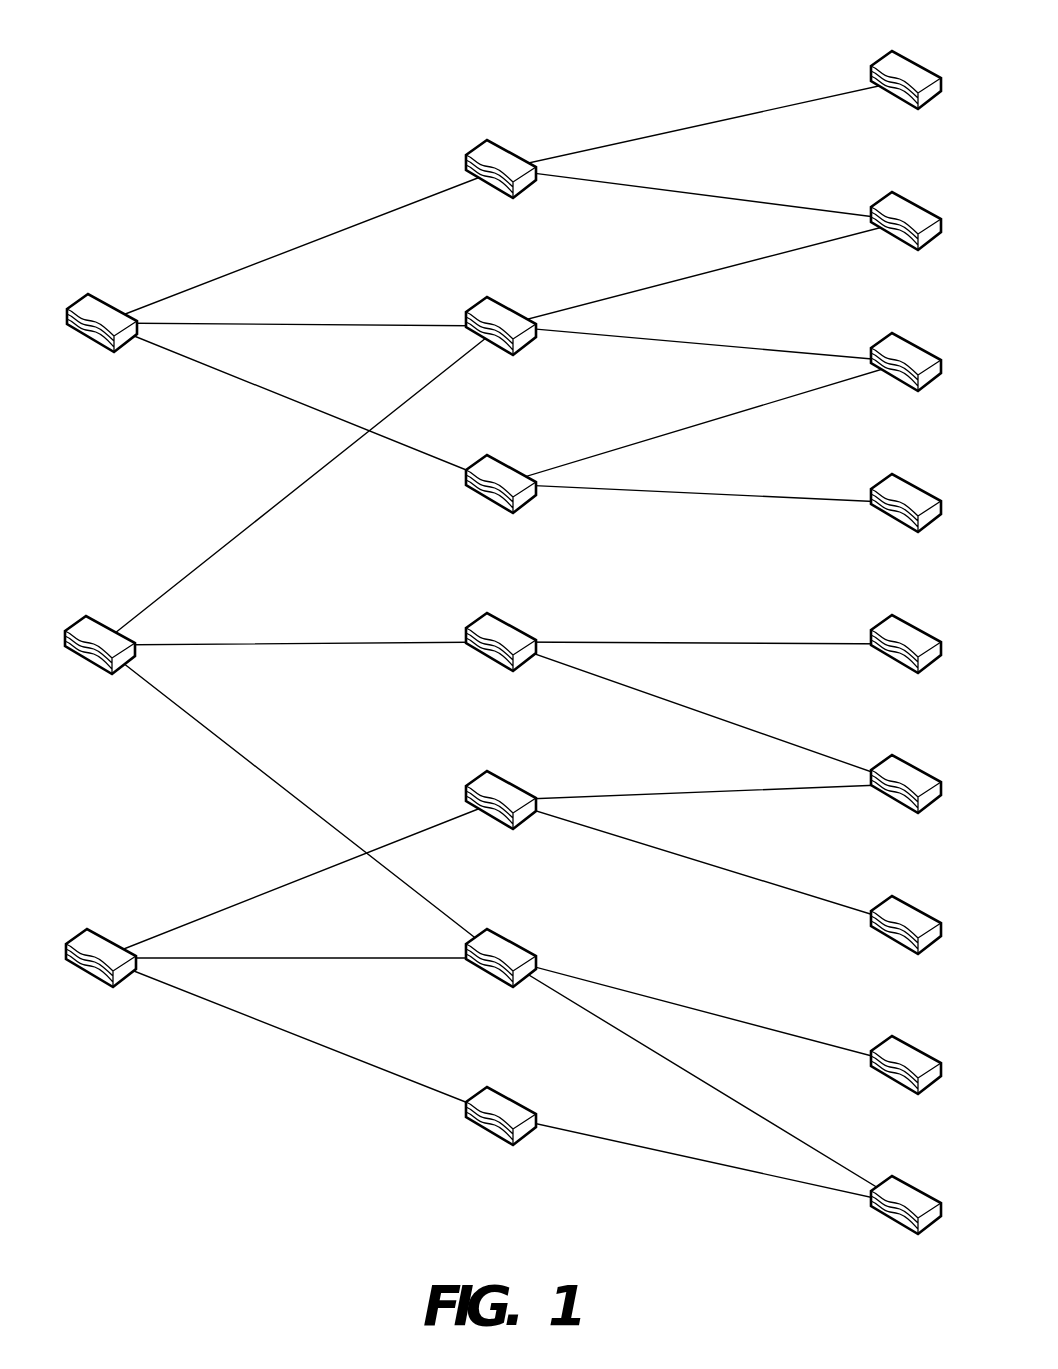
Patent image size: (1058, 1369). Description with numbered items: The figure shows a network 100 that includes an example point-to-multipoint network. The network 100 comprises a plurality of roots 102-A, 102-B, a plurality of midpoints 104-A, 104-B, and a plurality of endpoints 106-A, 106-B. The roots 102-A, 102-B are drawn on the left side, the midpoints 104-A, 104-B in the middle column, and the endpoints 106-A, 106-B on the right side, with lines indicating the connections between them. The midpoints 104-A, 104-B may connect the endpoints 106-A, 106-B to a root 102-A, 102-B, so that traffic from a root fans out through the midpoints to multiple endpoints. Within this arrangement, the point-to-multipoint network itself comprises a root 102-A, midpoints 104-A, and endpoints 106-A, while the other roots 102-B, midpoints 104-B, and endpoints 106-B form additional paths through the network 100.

The network 100 is at (166, 91).
The root 102-A is at (100, 662).
The root 102-B is at (101, 657).
The midpoint 104-A is at (501, 658).
The midpoint 104-B is at (501, 659).
The endpoint 106-A is at (906, 729).
The endpoint 106-B is at (906, 519).